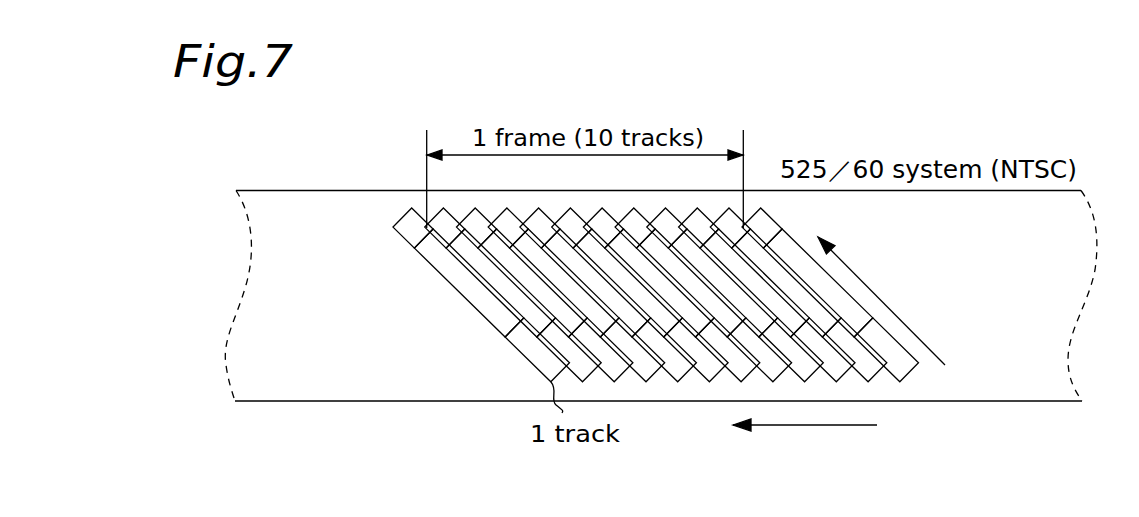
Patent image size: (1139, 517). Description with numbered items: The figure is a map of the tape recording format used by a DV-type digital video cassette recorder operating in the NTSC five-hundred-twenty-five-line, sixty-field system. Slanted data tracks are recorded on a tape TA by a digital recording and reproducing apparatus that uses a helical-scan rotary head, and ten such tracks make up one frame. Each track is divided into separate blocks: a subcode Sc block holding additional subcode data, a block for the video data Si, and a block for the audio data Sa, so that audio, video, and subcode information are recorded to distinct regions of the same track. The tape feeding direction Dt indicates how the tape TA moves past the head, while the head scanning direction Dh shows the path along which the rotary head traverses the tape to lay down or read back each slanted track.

The tape TA is at (311, 392).
The subcode Sc is at (409, 238).
The video data Si is at (457, 286).
The audio data Sa is at (518, 351).
The head scanning direction Dh is at (881, 301).
The tape feeding direction Dt is at (805, 439).